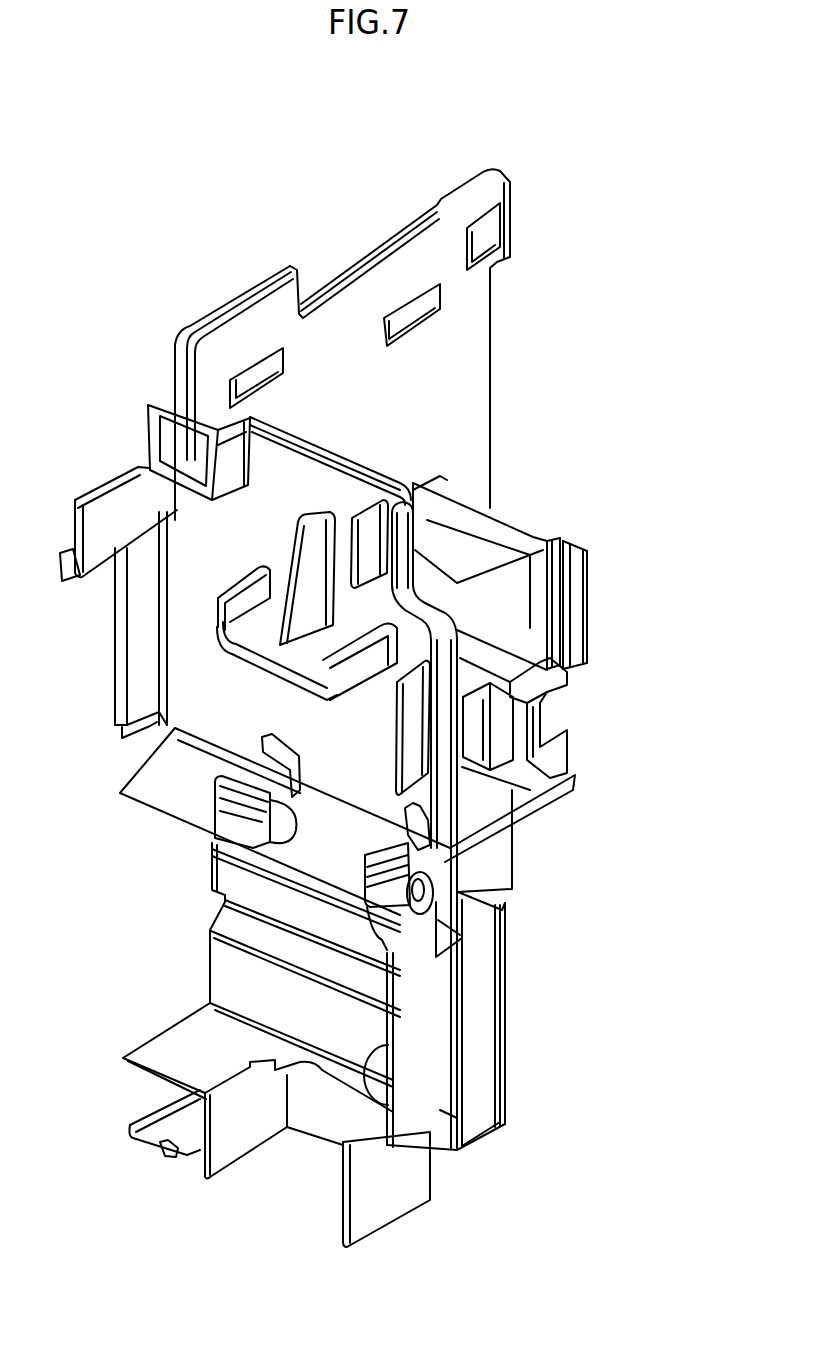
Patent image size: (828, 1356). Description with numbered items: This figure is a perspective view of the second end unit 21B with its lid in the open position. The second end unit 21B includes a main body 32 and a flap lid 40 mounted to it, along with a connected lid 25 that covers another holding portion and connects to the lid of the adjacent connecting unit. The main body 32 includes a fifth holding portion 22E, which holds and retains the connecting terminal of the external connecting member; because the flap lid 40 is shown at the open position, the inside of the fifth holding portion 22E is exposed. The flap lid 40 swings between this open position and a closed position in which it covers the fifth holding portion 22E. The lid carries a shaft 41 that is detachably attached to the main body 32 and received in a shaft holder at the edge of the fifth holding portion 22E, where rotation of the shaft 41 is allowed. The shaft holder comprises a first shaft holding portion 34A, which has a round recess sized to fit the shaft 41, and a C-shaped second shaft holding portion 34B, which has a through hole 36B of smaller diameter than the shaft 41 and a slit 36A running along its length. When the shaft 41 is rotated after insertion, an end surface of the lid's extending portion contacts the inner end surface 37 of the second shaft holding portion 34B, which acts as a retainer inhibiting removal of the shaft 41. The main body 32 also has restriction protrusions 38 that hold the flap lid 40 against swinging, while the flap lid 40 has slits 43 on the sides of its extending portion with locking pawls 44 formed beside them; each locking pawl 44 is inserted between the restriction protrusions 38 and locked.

The connected lid 25 is at (477, 370).
The flap lid 40 is at (301, 432).
The second end unit 21B is at (556, 464).
The locking pawl 44 is at (173, 745).
The restriction protrusion 38 is at (228, 826).
The first shaft holding portion 34A is at (217, 830).
The inner end surface 37 is at (365, 865).
The second shaft holding portion 34B is at (390, 920).
The slit 43 is at (413, 815).
The slit 36A is at (433, 875).
The shaft 41 is at (420, 888).
The through hole 36B is at (433, 900).
The main body 32 is at (483, 1062).
The fifth holding portion 22E is at (383, 1103).